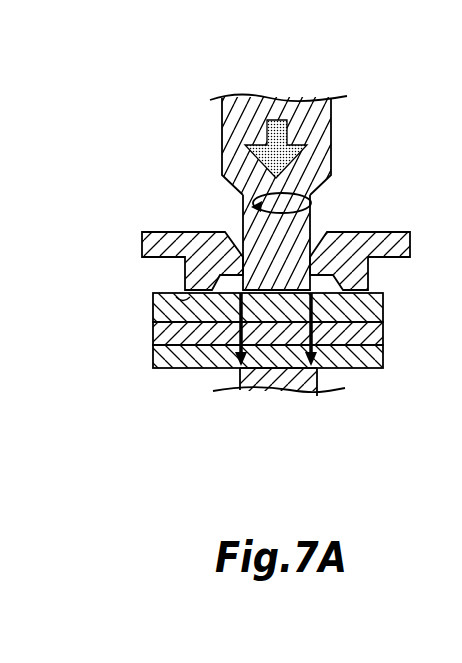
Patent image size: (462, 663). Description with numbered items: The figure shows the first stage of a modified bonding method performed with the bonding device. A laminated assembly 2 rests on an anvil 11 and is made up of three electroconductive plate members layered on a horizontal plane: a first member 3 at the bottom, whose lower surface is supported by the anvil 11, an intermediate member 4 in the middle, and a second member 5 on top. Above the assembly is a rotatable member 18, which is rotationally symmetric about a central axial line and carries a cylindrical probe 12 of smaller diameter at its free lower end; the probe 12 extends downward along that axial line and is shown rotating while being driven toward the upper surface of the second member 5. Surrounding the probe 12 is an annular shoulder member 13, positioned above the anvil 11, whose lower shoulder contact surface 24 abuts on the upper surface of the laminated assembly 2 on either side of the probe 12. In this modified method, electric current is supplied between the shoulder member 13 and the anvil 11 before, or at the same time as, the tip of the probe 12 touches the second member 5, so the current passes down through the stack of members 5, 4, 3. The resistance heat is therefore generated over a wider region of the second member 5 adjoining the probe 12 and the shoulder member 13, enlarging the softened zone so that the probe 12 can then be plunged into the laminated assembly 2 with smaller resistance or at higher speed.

The rotatable member 18 is at (308, 96).
The probe 12 is at (305, 228).
The shoulder member 13 is at (389, 229).
The shoulder contact surface 24 is at (183, 297).
The laminated assembly 2 is at (302, 333).
The second member 5 is at (373, 310).
The intermediate member 4 is at (375, 334).
The first member 3 is at (282, 359).
The anvil 11 is at (295, 393).